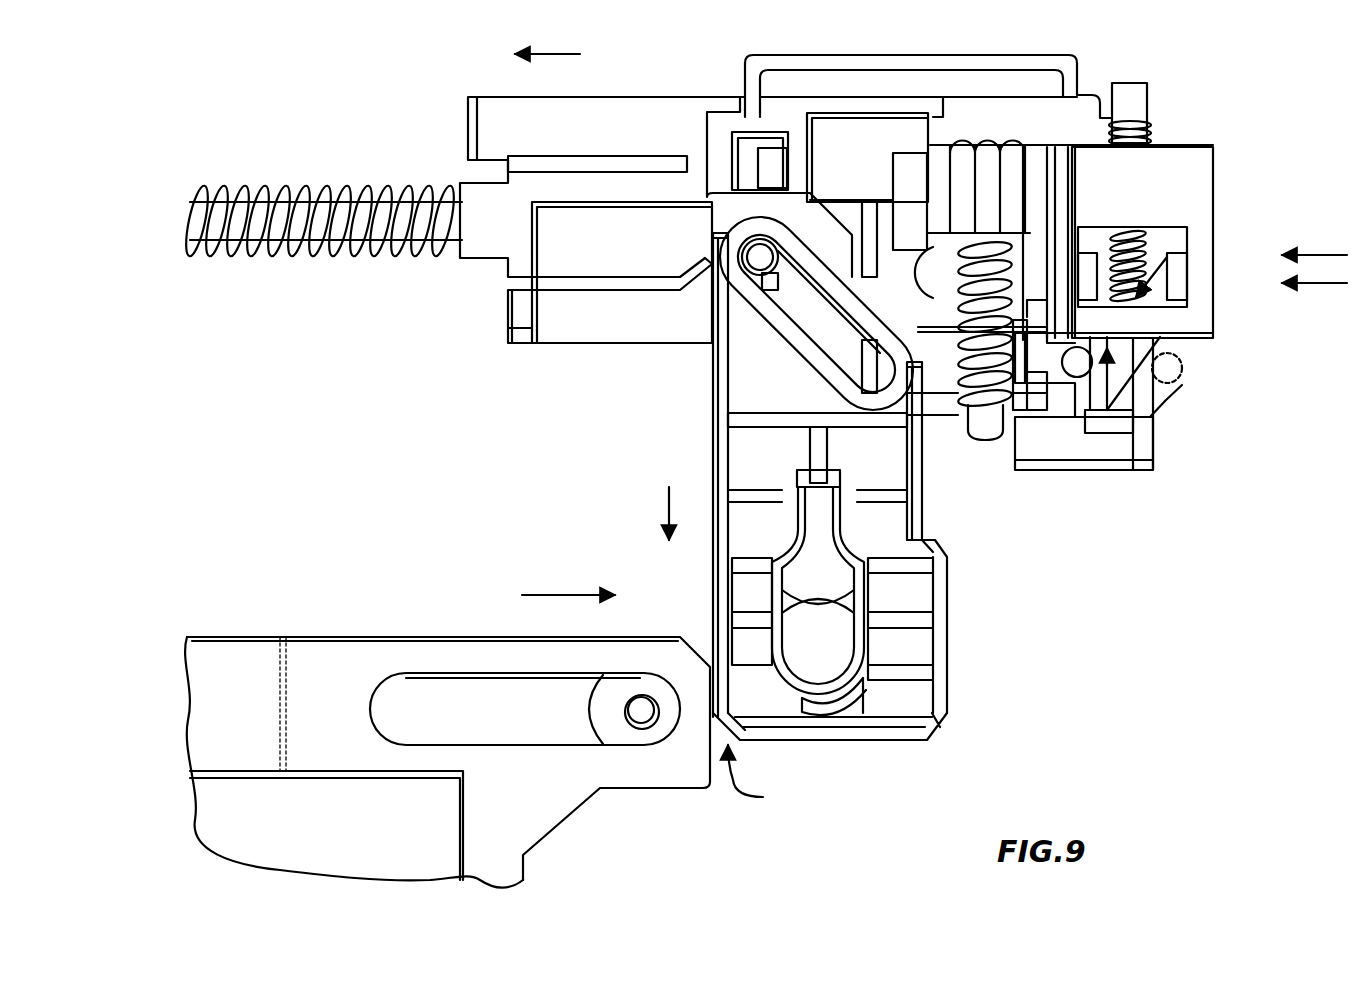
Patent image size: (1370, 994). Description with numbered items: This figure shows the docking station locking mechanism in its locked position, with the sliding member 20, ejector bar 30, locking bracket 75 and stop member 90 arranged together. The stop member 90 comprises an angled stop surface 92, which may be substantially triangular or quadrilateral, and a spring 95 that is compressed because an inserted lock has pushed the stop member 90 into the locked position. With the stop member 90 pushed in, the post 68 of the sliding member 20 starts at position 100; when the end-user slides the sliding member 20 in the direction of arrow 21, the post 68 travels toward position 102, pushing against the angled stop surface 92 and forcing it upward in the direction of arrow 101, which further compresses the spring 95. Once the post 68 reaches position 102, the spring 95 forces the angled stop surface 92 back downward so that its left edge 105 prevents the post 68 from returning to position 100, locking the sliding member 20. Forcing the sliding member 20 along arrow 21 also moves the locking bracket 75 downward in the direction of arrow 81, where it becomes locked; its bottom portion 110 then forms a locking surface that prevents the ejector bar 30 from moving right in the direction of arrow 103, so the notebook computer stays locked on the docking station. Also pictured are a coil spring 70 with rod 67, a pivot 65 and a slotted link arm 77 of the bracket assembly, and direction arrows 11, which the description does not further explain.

The firearm 11 is at (1303, 285).
The sliding member 20 is at (577, 118).
The arrow 21 is at (575, 50).
The ejector bar 30 is at (330, 652).
The pivot pin 65 is at (762, 257).
The striker rod 67 is at (343, 197).
The post 68 is at (1073, 360).
The striker spring 70 is at (277, 192).
The locking bracket 75 is at (713, 440).
The link arm 77 is at (850, 360).
The arrow 81 is at (660, 503).
The stop member 90 is at (1182, 171).
The angled stop surface 92 is at (1113, 407).
The spring 95 is at (1163, 225).
The position 100 is at (1183, 365).
The arrow 101 is at (1150, 417).
The position 102 is at (990, 400).
The arrow 103 is at (548, 592).
The left edge 105 is at (1077, 377).
The bottom portion 110 is at (769, 778).